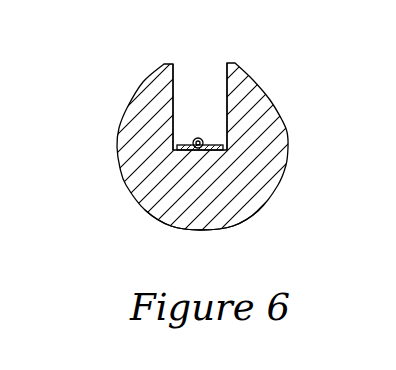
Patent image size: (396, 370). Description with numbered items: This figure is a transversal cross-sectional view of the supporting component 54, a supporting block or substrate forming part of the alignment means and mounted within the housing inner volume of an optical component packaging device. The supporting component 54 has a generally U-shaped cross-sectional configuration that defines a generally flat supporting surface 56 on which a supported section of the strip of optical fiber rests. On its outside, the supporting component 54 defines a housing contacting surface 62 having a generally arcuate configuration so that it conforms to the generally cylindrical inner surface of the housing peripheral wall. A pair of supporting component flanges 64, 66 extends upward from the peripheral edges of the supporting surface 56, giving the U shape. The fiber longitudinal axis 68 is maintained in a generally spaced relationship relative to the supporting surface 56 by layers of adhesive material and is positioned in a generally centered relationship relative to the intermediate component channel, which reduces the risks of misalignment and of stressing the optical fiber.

The supporting component 54 is at (258, 170).
The supporting surface 56 is at (178, 151).
The housing contacting surface 62 is at (228, 231).
The supporting component flange 64 is at (175, 72).
The supporting component flange 66 is at (227, 75).
The fiber longitudinal axis 68 is at (198, 142).